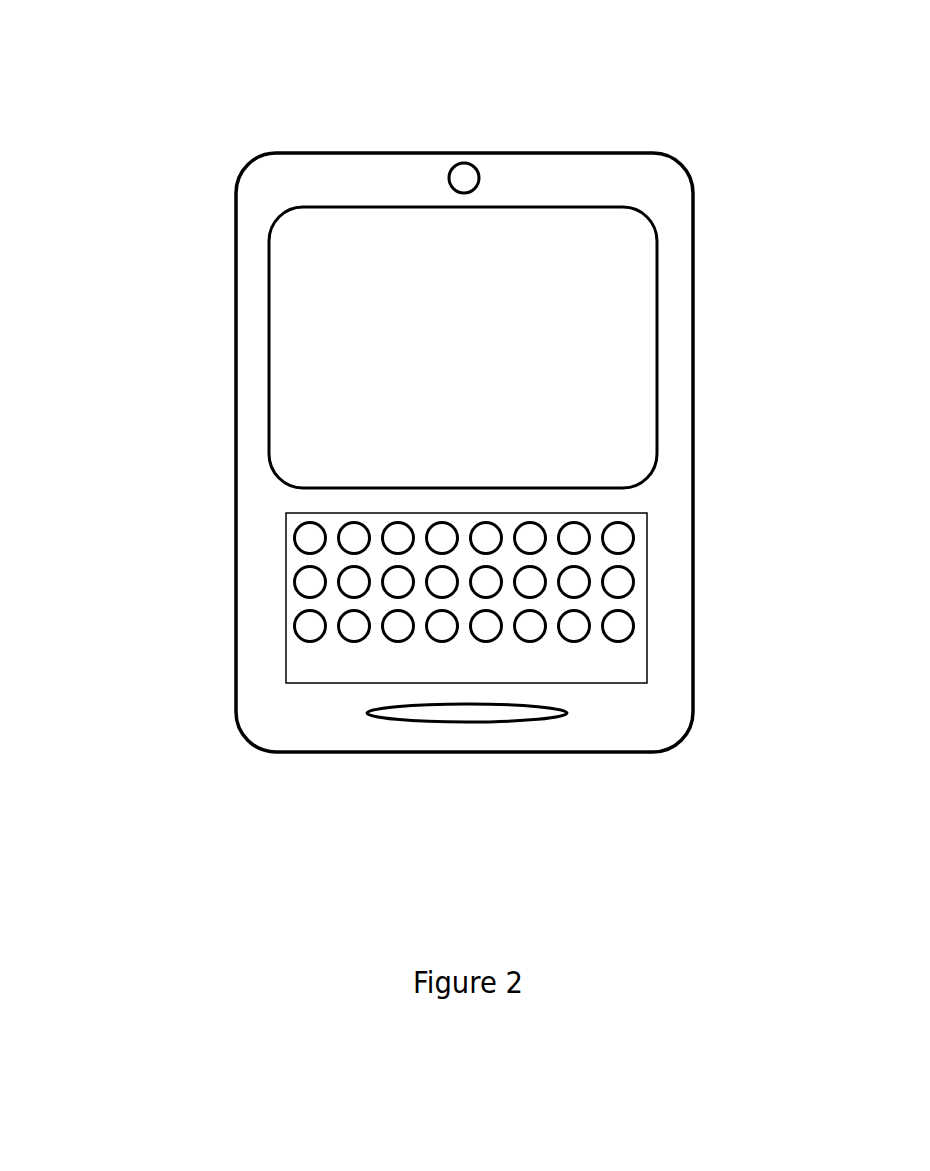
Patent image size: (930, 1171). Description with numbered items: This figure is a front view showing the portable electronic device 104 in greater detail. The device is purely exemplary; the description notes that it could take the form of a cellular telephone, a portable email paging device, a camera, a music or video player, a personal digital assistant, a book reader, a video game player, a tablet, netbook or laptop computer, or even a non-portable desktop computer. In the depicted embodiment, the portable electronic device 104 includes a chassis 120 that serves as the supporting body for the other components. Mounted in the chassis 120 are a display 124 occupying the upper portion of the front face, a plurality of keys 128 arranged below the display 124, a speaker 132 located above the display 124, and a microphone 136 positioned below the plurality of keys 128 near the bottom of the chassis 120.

The portable electronic device 104 is at (143, 172).
The chassis 120 is at (250, 419).
The display 124 is at (463, 347).
The plurality of keys 128 is at (656, 585).
The speaker 132 is at (465, 177).
The microphone 136 is at (487, 713).